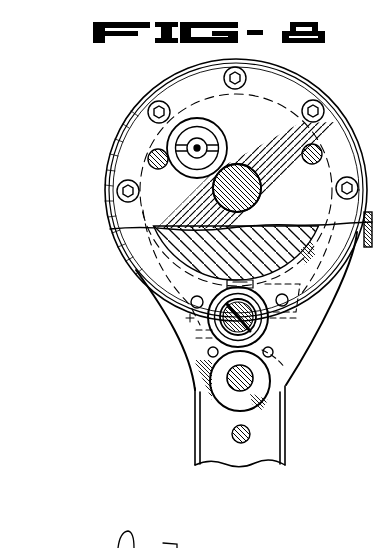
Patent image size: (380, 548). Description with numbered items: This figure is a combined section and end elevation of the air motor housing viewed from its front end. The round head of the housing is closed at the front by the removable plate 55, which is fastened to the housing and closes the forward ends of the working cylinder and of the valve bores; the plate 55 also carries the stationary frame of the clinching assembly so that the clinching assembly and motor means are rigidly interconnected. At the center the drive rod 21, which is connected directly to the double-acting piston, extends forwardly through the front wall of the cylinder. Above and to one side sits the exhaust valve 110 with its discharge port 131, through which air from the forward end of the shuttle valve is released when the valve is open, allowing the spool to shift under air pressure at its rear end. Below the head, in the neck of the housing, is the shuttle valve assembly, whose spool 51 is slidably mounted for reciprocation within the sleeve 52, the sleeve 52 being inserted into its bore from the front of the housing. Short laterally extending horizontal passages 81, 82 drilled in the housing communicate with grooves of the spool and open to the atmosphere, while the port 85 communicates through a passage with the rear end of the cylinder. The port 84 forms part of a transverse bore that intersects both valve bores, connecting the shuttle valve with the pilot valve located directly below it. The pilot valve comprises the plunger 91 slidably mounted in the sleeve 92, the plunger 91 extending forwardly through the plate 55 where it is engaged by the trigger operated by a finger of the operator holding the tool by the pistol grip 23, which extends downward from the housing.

The exhaust valve 110 is at (176, 138).
The discharge port 131 is at (200, 148).
The drive rod 21 is at (240, 190).
The removable plate 55 is at (200, 215).
The port 85 is at (296, 285).
The horizontal passage 82 is at (268, 311).
The horizontal passage 81 is at (190, 319).
The spool 51 is at (248, 320).
The sleeve 52 is at (266, 337).
The port 84 is at (286, 367).
The plunger 91 is at (252, 381).
The sleeve 92 is at (254, 397).
The pistol grip 23 is at (267, 450).